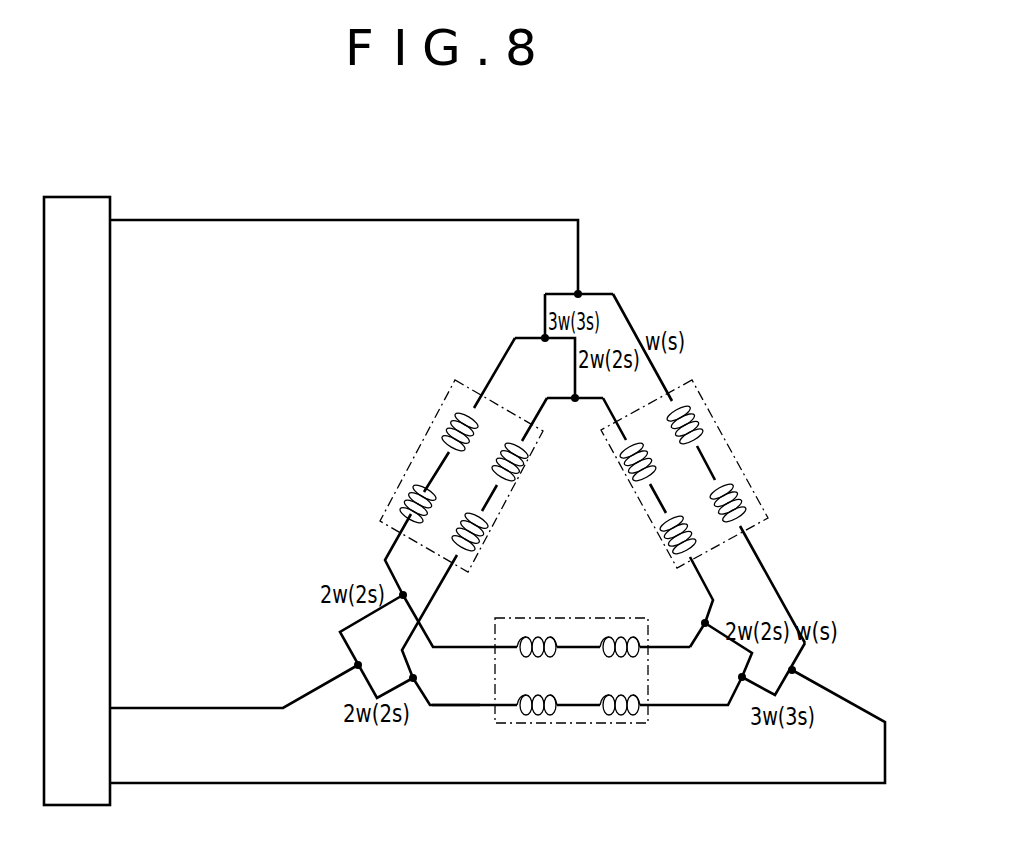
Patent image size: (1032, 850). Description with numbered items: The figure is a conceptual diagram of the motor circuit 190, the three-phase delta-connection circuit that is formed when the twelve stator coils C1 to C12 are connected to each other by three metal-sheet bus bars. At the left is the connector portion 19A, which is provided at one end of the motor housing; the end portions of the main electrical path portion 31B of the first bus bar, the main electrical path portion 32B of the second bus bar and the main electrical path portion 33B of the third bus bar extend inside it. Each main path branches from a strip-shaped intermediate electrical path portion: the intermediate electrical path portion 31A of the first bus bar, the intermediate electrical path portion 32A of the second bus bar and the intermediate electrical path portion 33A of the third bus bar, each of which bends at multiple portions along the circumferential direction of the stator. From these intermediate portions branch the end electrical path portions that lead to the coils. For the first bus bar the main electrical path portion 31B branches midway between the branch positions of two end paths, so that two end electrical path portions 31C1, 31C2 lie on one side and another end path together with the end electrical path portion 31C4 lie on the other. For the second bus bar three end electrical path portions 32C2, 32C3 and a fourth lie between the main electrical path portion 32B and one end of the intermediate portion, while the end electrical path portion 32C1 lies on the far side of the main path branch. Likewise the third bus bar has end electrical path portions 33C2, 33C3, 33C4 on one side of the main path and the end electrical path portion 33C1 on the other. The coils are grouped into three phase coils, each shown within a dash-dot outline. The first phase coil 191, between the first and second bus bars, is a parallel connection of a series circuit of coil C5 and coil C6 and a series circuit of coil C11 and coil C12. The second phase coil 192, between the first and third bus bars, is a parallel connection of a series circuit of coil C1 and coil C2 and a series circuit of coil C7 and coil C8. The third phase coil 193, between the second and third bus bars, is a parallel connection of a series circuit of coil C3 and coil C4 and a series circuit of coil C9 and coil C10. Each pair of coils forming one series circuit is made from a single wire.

The connector portion 19A is at (78, 196).
The motor circuit 190 is at (319, 340).
The main electrical path portion 32B is at (580, 242).
The intermediate electrical path portion 32A is at (657, 295).
The end electrical path portion 32C2 is at (496, 362).
The end electrical path portion 32C3 is at (313, 544).
The end electrical path portion 32C1 is at (653, 367).
The first phase coil 191 is at (412, 457).
The second phase coil 192 is at (665, 725).
The third phase coil 193 is at (708, 398).
The coil C1 is at (540, 636).
The coil C2 is at (613, 636).
The coil C3 is at (637, 480).
The coil C4 is at (667, 543).
The coil C5 is at (518, 473).
The coil C6 is at (482, 540).
The coil C7 is at (618, 716).
The coil C8 is at (535, 716).
The coil C9 is at (745, 497).
The coil C10 is at (700, 432).
The coil C11 is at (405, 494).
The coil C12 is at (446, 420).
The end electrical path portion 33C4 is at (673, 645).
The end electrical path portion 33C3 is at (710, 575).
The end electrical path portion 33C1 is at (760, 560).
The end electrical path portion 33C2 is at (700, 703).
The intermediate electrical path portion 31A is at (328, 608).
The main electrical path portion 31B is at (302, 710).
The end electrical path portion 31C1 is at (442, 586).
The end electrical path portion 31C2 is at (471, 708).
The end electrical path portion 31C4 is at (472, 649).
The intermediate electrical path portion 33A is at (786, 742).
The main electrical path portion 33B is at (838, 692).